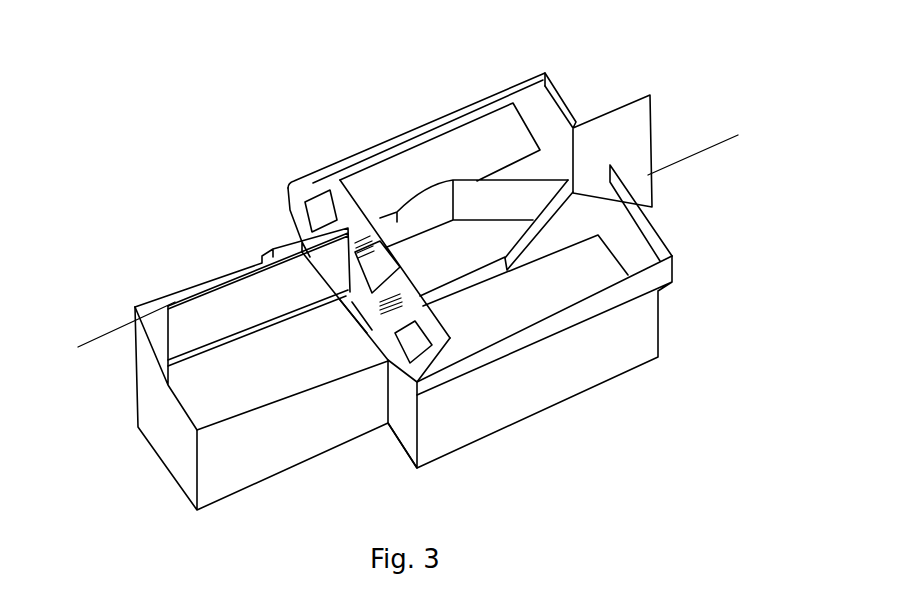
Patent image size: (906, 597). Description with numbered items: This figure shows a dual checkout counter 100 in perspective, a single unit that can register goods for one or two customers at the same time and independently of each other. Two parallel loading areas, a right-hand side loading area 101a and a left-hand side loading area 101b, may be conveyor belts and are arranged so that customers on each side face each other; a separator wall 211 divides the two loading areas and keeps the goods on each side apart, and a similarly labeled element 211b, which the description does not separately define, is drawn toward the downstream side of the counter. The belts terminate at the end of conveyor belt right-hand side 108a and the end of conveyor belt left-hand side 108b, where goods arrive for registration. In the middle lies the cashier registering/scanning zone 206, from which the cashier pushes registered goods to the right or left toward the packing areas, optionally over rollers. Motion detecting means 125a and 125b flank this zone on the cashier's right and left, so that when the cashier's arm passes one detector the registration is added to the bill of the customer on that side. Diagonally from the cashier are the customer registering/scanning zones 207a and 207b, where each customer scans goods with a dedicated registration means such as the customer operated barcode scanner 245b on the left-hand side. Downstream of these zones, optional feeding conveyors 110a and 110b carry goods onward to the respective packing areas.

The dual checkout counter 100 is at (434, 32).
The right-hand side loading area 101a is at (163, 313).
The left-hand side loading area 101b is at (253, 297).
The end of conveyor belt right-hand side 108a is at (527, 123).
The end of conveyor belt left-hand side 108b is at (617, 258).
The feeding conveyor 110a is at (428, 160).
The feeding conveyor 110b is at (544, 281).
The motion detecting means cashier right-hand side 125a is at (367, 245).
The motion detecting means cashier left-hand side 125b is at (403, 300).
The cashier registering/scanning zone 206 is at (352, 230).
The customer registering/scanning zone, right-hand side 207a is at (323, 168).
The customer registering/scanning zone, left-hand side 207b is at (438, 373).
The separator wall 211 is at (108, 331).
The axis line 211b is at (713, 151).
The customer operated barcode scanner left-hand side 245b is at (413, 338).